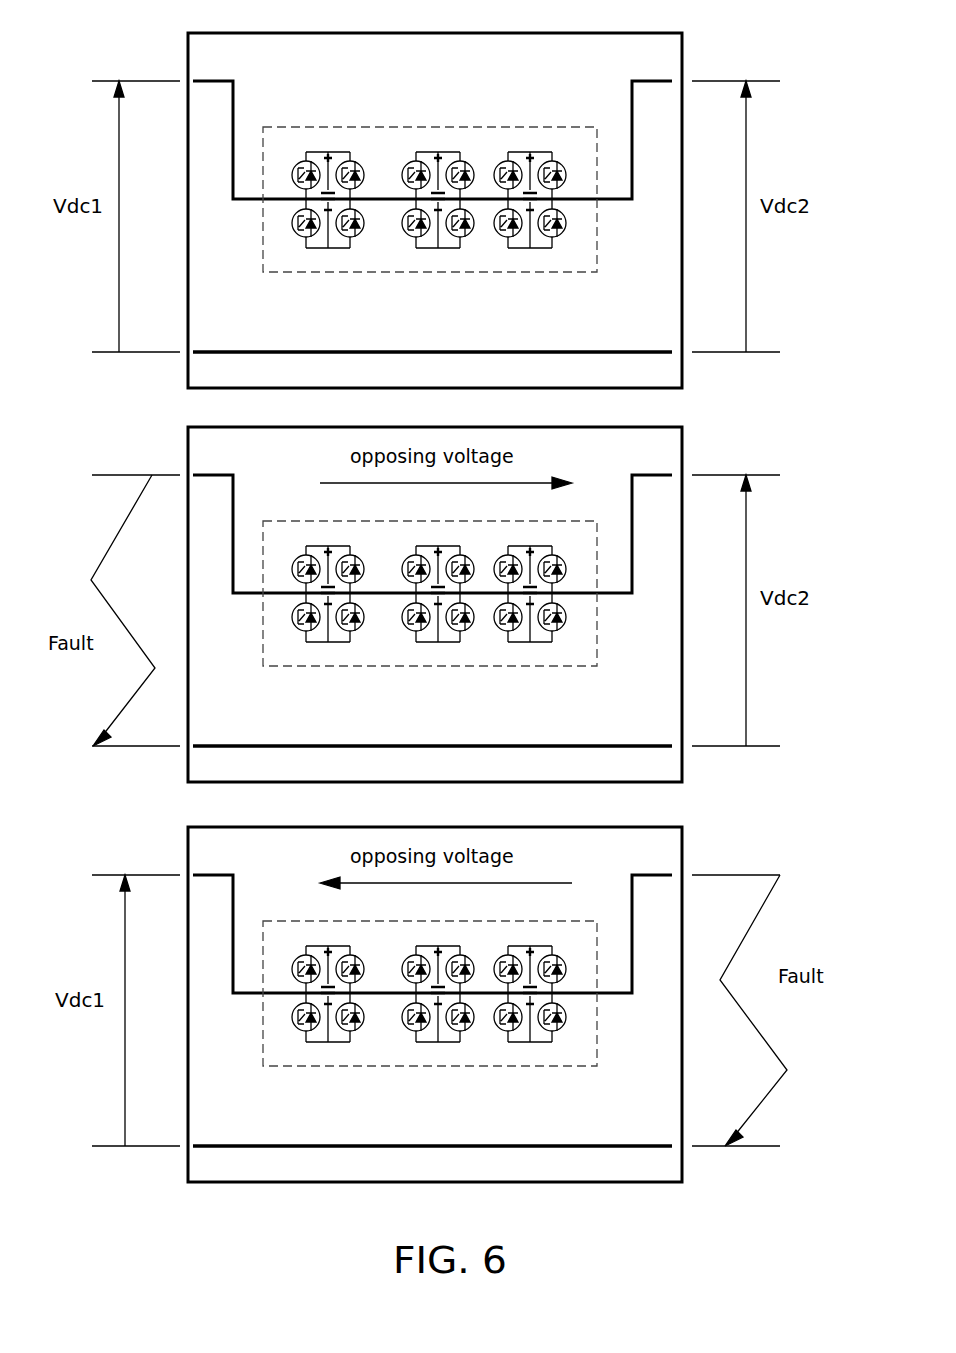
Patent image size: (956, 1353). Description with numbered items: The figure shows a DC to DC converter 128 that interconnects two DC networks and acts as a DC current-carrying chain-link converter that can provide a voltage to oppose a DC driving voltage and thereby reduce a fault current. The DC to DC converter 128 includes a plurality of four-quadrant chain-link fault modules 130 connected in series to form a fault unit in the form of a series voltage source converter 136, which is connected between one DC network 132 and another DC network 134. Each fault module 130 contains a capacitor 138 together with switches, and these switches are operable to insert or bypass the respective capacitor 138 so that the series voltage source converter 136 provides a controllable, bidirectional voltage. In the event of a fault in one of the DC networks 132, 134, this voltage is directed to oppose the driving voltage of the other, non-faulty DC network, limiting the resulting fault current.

The DC to DC converter 128 is at (683, 42).
The 4-quadrant chain-link fault module 130 is at (313, 151).
The DC network 132 is at (135, 80).
The DC network 134 is at (770, 81).
The series voltage source converter 136 is at (410, 127).
The capacitor 138 is at (417, 200).